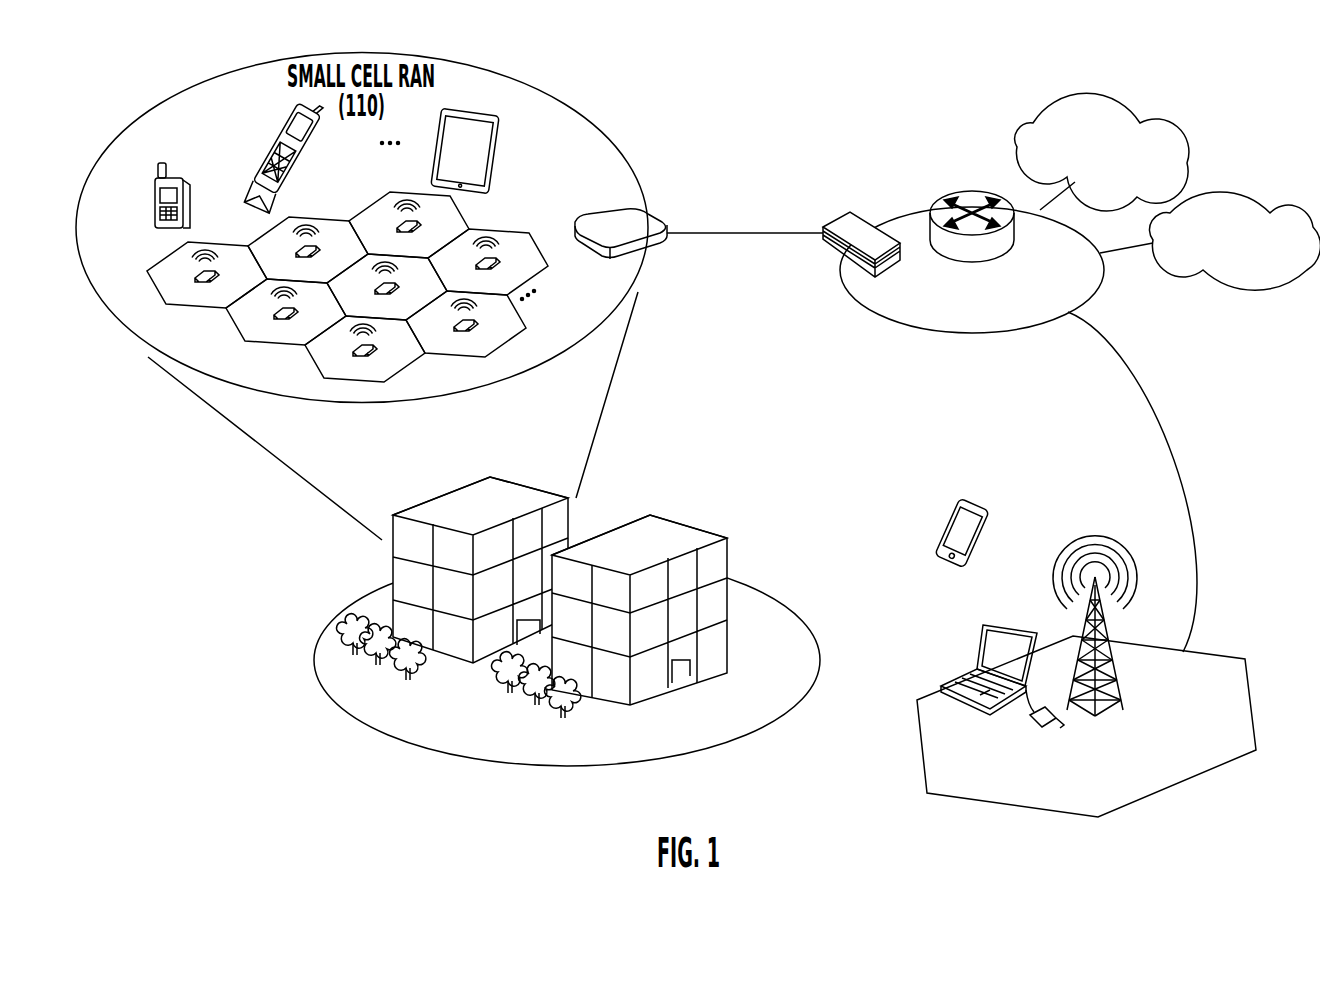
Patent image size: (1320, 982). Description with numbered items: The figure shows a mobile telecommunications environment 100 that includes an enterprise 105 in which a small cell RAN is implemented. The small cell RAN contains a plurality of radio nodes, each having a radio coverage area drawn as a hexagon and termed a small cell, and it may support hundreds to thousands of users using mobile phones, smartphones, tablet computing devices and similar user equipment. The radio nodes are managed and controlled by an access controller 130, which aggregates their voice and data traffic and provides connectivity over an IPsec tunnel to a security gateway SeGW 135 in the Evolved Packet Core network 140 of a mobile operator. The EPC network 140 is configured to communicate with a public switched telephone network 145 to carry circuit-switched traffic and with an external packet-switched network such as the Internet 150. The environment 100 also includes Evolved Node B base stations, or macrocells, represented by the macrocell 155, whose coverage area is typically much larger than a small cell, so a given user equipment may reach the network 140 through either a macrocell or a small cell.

The mobile telecommunications environment 100 is at (722, 92).
The enterprise 105 is at (315, 657).
The access controller 130 is at (657, 215).
The security gateway (SeGW) 135 is at (843, 213).
The Evolved Packet Core (EPC) network 140 is at (1040, 322).
The public switched telephone network (PSTN) 145 is at (1258, 198).
The Internet 150 is at (1068, 93).
The macrocell 155 is at (1073, 820).